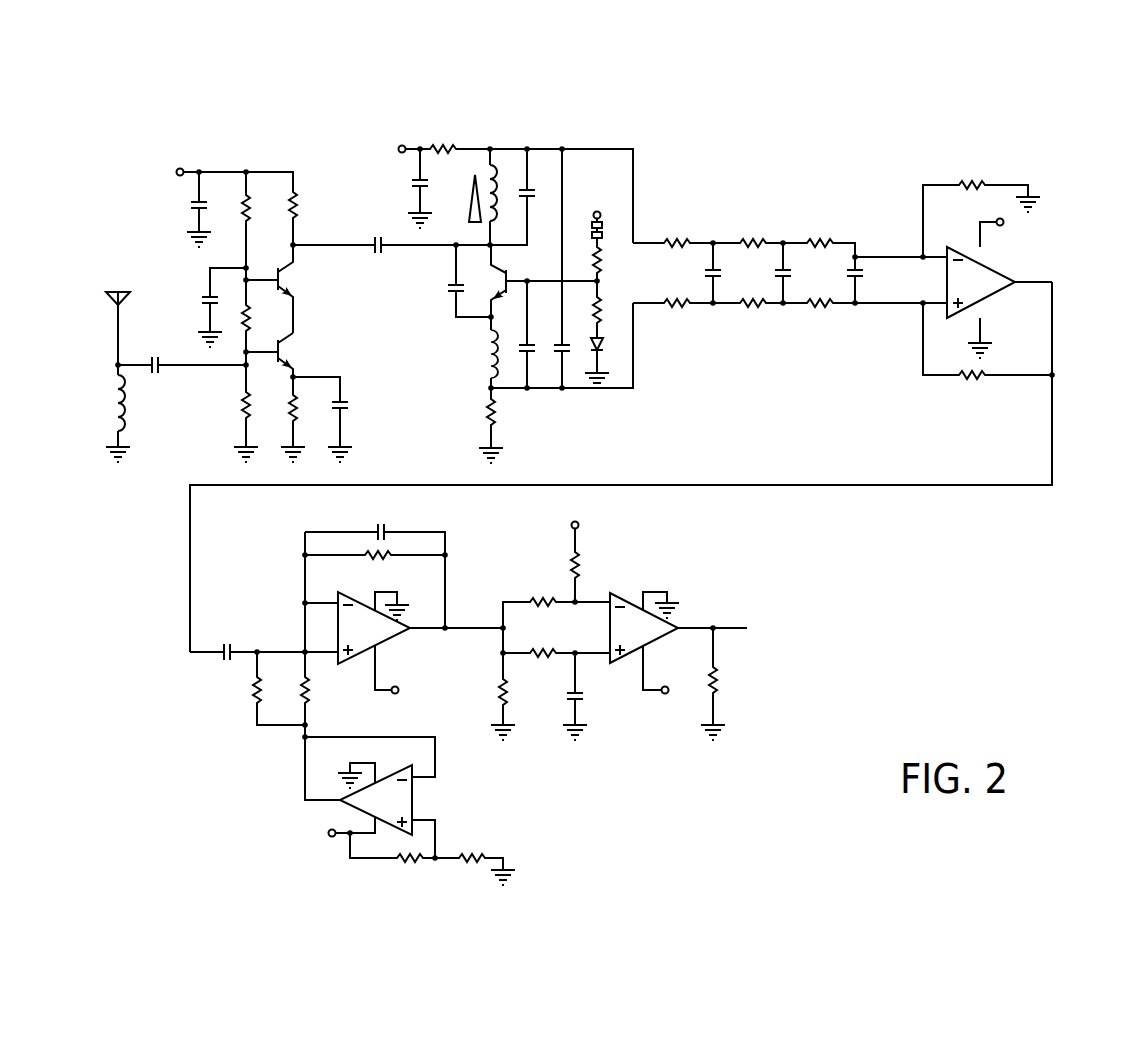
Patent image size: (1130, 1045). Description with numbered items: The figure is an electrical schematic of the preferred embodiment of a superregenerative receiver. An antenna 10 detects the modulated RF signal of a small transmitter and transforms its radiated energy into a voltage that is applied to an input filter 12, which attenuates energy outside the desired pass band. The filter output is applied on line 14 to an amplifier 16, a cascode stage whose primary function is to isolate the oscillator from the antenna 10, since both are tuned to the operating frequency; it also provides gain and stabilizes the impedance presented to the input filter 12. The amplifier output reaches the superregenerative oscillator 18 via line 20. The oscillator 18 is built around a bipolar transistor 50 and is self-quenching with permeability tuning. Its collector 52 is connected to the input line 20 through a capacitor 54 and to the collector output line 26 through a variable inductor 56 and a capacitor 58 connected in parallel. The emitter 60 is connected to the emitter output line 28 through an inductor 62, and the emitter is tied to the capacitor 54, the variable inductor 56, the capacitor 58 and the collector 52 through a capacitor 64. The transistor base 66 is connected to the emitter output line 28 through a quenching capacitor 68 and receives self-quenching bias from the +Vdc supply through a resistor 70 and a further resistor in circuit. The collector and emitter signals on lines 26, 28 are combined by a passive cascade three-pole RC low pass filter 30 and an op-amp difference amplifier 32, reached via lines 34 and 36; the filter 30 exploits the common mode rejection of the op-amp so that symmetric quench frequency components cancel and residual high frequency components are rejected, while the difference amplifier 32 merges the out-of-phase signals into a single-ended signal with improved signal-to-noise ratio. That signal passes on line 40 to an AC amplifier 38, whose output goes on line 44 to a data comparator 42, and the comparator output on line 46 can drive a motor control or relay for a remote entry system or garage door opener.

The antenna 10 is at (111, 304).
The input filter 12 is at (176, 415).
The line 14 is at (210, 368).
The amplifier 16 is at (295, 161).
The superregenerative oscillator 18 is at (474, 259).
The line 20 is at (355, 244).
The collector output line 26 is at (635, 218).
The emitter output line 28 is at (636, 332).
The passive low pass filter 30 is at (815, 204).
The difference amplifier 32 is at (1037, 172).
The line 34 is at (898, 255).
The line 36 is at (895, 305).
The amplifier 38 is at (352, 694).
The line 40 is at (833, 488).
The data comparator 42 is at (638, 650).
The line 44 is at (473, 624).
The line 46 is at (741, 631).
The bipolar transistor 50 is at (496, 301).
The collector 52 is at (495, 267).
The capacitor 54 is at (386, 243).
The variable inductor 56 is at (498, 190).
The capacitor 58 is at (530, 198).
The emitter 60 is at (497, 296).
The inductor 62 is at (488, 358).
The capacitor 64 is at (453, 291).
The transistor base 66 is at (507, 280).
The quenching capacitor 68 is at (530, 345).
The resistor 70 is at (603, 257).